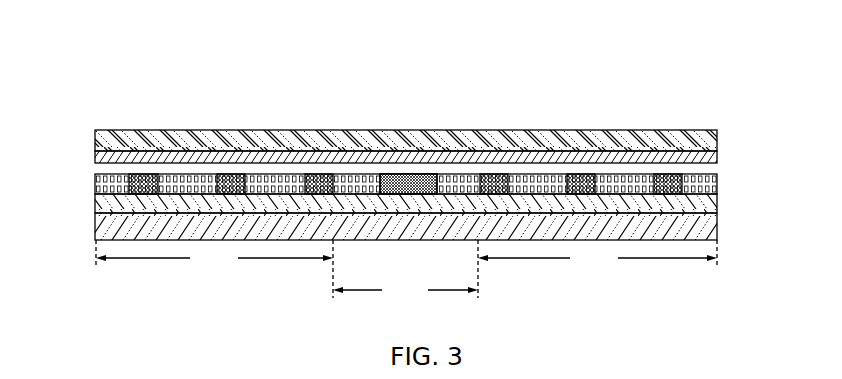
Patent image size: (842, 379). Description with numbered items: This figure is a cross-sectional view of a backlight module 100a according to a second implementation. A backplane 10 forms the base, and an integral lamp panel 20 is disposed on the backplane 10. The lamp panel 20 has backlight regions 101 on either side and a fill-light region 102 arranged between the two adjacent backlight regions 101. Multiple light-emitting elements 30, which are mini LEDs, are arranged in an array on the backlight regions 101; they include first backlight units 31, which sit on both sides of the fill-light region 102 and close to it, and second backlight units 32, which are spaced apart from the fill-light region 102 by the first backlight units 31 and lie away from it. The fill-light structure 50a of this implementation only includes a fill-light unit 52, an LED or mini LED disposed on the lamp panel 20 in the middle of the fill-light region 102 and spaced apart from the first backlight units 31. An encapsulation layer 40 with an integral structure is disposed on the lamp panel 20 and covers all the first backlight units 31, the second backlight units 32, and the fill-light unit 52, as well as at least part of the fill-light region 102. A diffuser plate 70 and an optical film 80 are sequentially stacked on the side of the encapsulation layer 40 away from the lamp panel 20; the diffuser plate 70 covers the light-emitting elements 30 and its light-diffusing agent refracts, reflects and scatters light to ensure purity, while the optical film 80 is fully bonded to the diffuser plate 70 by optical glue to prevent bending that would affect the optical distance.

The backlight module 100a is at (151, 57).
The backplane 10 is at (693, 229).
The lamp panel 20 is at (693, 205).
The light-emitting elements 30 is at (405, 114).
The first backlight units 31 is at (313, 178).
The second backlight units 32 is at (229, 178).
The encapsulation layer 40 is at (537, 187).
The fill-light structure 50a is at (388, 177).
The fill-light unit 52 is at (418, 177).
The diffuser plate 70 is at (703, 161).
The optical film 80 is at (707, 143).
The backlight regions 101 is at (406, 255).
The fill-light region 102 is at (405, 271).